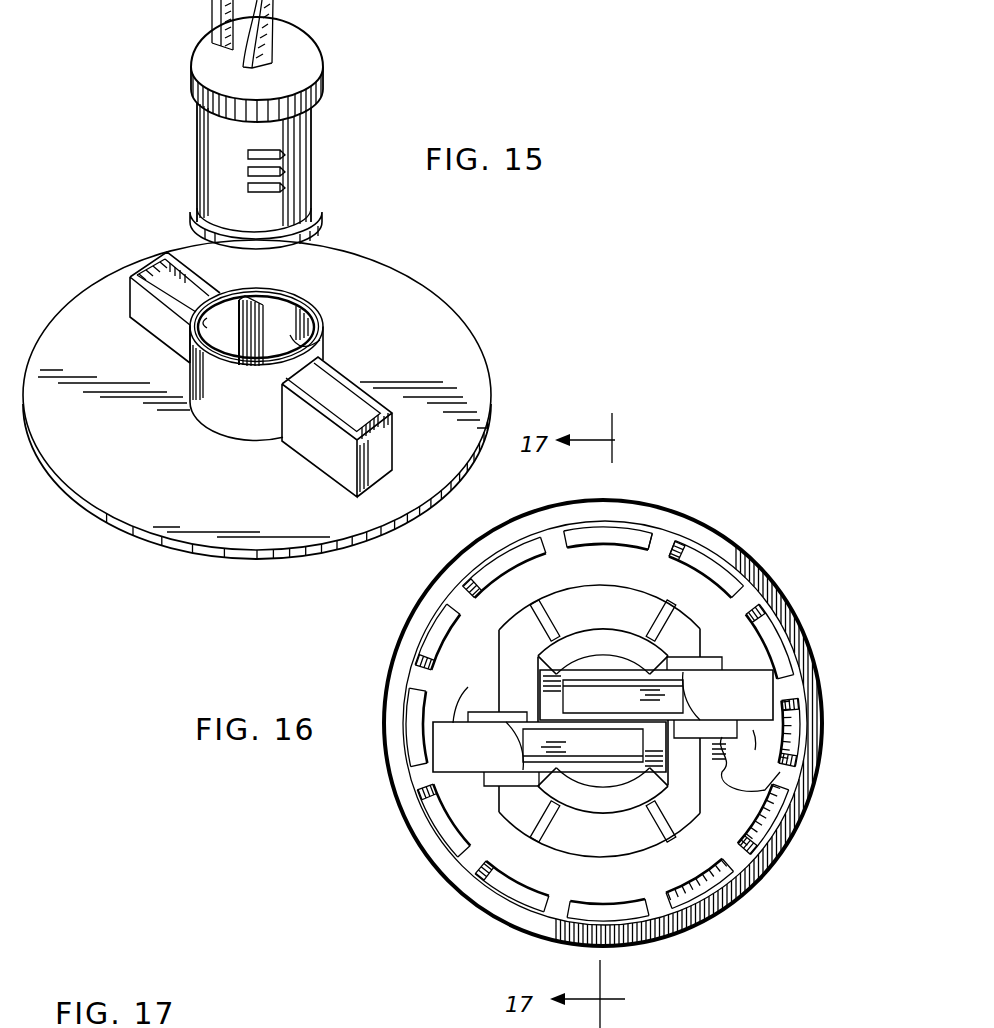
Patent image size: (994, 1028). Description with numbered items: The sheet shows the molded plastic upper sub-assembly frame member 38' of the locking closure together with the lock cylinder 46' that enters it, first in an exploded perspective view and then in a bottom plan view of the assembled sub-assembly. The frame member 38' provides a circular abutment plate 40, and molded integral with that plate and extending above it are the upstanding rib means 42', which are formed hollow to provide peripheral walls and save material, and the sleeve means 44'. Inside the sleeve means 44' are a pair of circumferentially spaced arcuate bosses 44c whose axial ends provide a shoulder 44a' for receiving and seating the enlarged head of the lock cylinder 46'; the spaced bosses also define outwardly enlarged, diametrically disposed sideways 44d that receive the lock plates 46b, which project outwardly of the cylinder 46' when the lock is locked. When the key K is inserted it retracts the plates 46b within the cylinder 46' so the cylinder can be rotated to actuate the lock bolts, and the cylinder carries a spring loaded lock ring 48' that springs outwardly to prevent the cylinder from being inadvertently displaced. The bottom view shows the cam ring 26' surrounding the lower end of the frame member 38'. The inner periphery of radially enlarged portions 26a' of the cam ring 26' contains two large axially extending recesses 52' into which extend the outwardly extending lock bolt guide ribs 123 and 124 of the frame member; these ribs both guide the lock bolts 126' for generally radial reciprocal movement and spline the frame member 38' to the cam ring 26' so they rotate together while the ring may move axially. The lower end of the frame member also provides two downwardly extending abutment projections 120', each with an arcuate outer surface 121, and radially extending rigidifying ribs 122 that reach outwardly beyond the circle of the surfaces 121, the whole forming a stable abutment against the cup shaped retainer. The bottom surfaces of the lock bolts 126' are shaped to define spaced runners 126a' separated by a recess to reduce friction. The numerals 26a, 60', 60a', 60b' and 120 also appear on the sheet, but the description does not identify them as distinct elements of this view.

In FIG. 15, the key K is at (212, 6).
In FIG. 15, the lock cylinder 46' is at (231, 124).
In FIG. 15, the lock plates 46b is at (284, 186).
In FIG. 15, the spring loaded lock ring 48' is at (289, 217).
In FIG. 15, the circular abutment plate 40 is at (413, 323).
In FIG. 15, the frame member 38' is at (278, 430).
In FIG. 15, the upstanding rib means 42' is at (241, 379).
In FIG. 15, the sleeve means 44' is at (247, 377).
In FIG. 15, the shoulder 44a' is at (279, 311).
In FIG. 15, the arcuate bosses 44c is at (288, 320).
In FIG. 15, the sideways 44d is at (225, 318).
In FIG. 16, the cam ring 26' is at (603, 723).
In FIG. 16, the radially enlarged portions 26a' is at (525, 653).
In FIG. 16, the pole piece portion 26a is at (687, 722).
In FIG. 16, the slotted ring 60' is at (603, 700).
In FIG. 16, the ring slot 60a' is at (673, 508).
In FIG. 16, the ring tooth 60b' is at (725, 551).
In FIG. 16, the upper arcuate member 120 is at (501, 661).
In FIG. 16, the abutment projections 120' is at (603, 830).
In FIG. 16, the arcuate outer surface 121 is at (607, 623).
In FIG. 16, the rigidifying ribs 122 is at (553, 628).
In FIG. 16, the lock bolt guide rib 123 is at (503, 723).
In FIG. 16, the lock bolt guide rib 124 is at (713, 659).
In FIG. 16, the lock bolts 126' is at (615, 726).
In FIG. 16, the runners 126a' is at (601, 723).
In FIG. 16, the recesses 52' is at (616, 719).